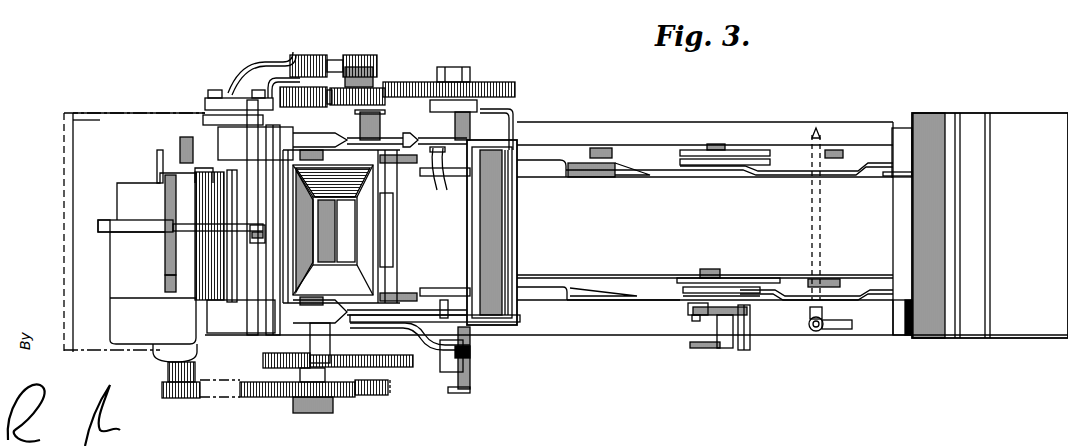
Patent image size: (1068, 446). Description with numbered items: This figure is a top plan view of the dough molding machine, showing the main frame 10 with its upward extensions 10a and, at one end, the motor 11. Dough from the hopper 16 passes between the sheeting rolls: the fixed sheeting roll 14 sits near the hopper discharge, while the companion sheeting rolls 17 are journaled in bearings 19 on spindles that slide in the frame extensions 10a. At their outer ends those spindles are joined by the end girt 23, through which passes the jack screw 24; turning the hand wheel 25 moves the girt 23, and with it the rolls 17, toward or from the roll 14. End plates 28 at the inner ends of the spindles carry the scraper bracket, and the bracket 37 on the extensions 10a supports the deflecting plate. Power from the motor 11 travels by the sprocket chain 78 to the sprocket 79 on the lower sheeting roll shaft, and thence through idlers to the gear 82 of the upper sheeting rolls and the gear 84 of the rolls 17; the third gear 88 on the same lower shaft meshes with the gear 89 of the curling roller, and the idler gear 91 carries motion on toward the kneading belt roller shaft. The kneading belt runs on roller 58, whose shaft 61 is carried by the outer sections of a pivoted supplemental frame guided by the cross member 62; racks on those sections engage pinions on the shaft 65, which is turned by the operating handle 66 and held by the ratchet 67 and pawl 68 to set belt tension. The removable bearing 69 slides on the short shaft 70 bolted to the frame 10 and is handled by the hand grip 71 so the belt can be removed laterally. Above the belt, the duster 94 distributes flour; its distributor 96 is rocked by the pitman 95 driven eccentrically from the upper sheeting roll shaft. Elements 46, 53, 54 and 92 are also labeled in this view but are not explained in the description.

The main frame 10 is at (633, 121).
The upward extensions of the main frame 10a is at (245, 322).
The motor 11 is at (180, 277).
The sheeting roll 14 is at (327, 255).
The hopper 16 is at (362, 230).
The sheeting rolls 17 is at (349, 248).
The bearings 19 is at (380, 126).
The end girt 23 is at (180, 292).
The jack screw 24 is at (262, 235).
The hand wheel 25 is at (165, 203).
The end plates 28 is at (405, 290).
The bracket 37 is at (263, 190).
The base plate 46 is at (122, 113).
The column 53 is at (990, 225).
The roller 54 is at (812, 318).
The roller 58 is at (900, 172).
The shaft 61 is at (904, 322).
The cross member 62 is at (836, 279).
The shaft 65 is at (727, 279).
The operating handle 66 is at (704, 348).
The ratchet 67 is at (748, 330).
The pawl 68 is at (690, 310).
The bearing 69 is at (470, 370).
The short shaft 70 is at (450, 380).
The hand grip 71 is at (470, 352).
The sprocket chain 78 is at (220, 398).
The sprocket 79 is at (275, 390).
The gear 82 is at (270, 68).
The gear 84 is at (370, 72).
The third gear 88 is at (272, 362).
The gear 89 is at (405, 368).
The idler gear 91 is at (390, 87).
The gear 92 is at (485, 83).
The duster 94 is at (517, 222).
The pitman 95 is at (418, 352).
The distributor 96 is at (500, 252).